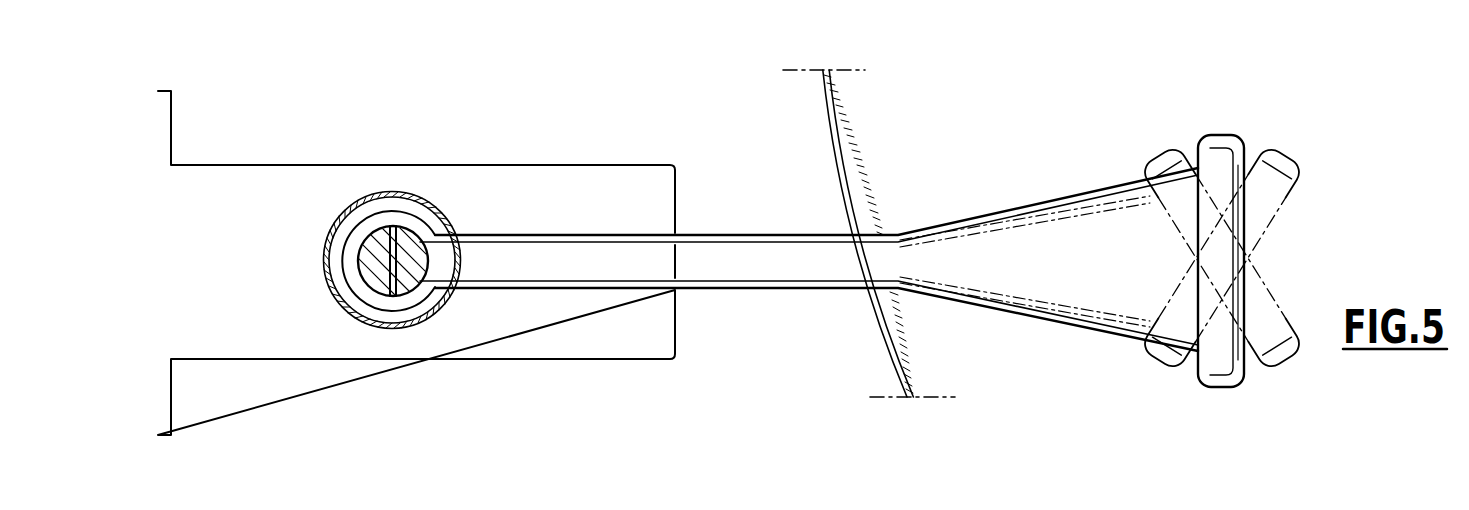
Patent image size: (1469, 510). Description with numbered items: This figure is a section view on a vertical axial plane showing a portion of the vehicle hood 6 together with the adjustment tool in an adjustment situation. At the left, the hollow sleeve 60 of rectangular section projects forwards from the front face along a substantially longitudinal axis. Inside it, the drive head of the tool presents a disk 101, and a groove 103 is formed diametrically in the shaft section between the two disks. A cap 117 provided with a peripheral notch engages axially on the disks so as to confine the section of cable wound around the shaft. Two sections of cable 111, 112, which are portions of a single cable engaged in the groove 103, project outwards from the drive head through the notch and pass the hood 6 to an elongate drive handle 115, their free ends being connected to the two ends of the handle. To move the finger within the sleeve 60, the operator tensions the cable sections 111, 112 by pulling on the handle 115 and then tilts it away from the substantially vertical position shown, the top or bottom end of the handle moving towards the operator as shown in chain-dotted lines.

The hollow sleeve 60 is at (577, 156).
The disk 101 is at (357, 235).
The groove 103 is at (381, 277).
The cap 117 is at (436, 314).
The hood 6 is at (860, 150).
The section of cable 111 is at (1062, 197).
The section of cable 112 is at (1077, 326).
The elongate drive handle 115 is at (1232, 260).